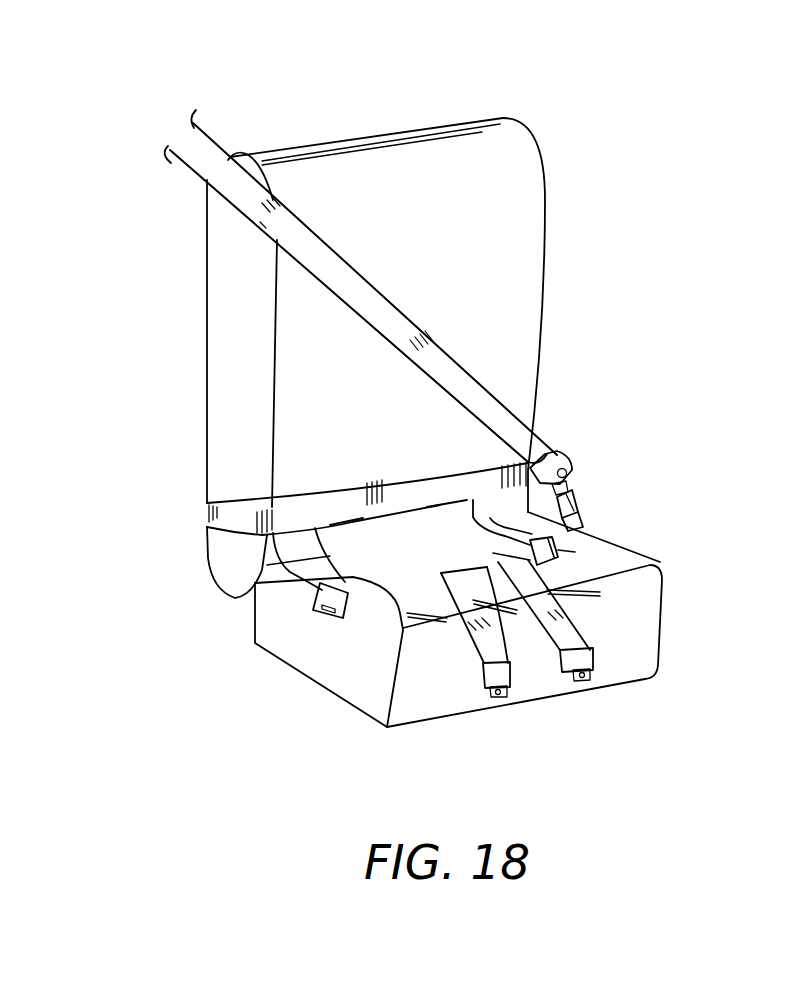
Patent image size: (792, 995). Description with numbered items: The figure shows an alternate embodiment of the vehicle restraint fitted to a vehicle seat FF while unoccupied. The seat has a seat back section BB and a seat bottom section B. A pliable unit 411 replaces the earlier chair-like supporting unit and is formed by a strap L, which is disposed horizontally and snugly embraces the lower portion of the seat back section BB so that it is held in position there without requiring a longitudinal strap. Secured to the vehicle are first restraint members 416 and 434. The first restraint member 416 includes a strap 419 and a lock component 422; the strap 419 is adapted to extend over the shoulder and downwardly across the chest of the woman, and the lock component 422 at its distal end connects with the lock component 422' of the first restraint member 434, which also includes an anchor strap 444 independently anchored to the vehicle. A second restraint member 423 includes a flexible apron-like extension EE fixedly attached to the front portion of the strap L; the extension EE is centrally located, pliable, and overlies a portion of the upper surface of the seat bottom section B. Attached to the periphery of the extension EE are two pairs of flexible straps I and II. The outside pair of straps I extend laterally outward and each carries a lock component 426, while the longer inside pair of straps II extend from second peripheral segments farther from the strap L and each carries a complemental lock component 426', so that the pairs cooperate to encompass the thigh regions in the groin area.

The seat back section BB is at (503, 172).
The seat bottom section B is at (380, 700).
The vehicle seat FF is at (190, 400).
The apron-like extension EE is at (360, 548).
The strap L is at (198, 507).
The pliable unit 411 is at (220, 541).
The first restraint member 416 is at (422, 316).
The strap 419 is at (275, 220).
The lock component 422 is at (588, 418).
The lock component 422' is at (620, 442).
The second restraint member 423 is at (378, 603).
The lock component 426 is at (501, 660).
The lock component 426' is at (528, 660).
The first restraint member 434 is at (600, 494).
The anchor strap 444 is at (578, 524).
The straps of first pair I is at (588, 556).
The straps of second pair II is at (463, 663).